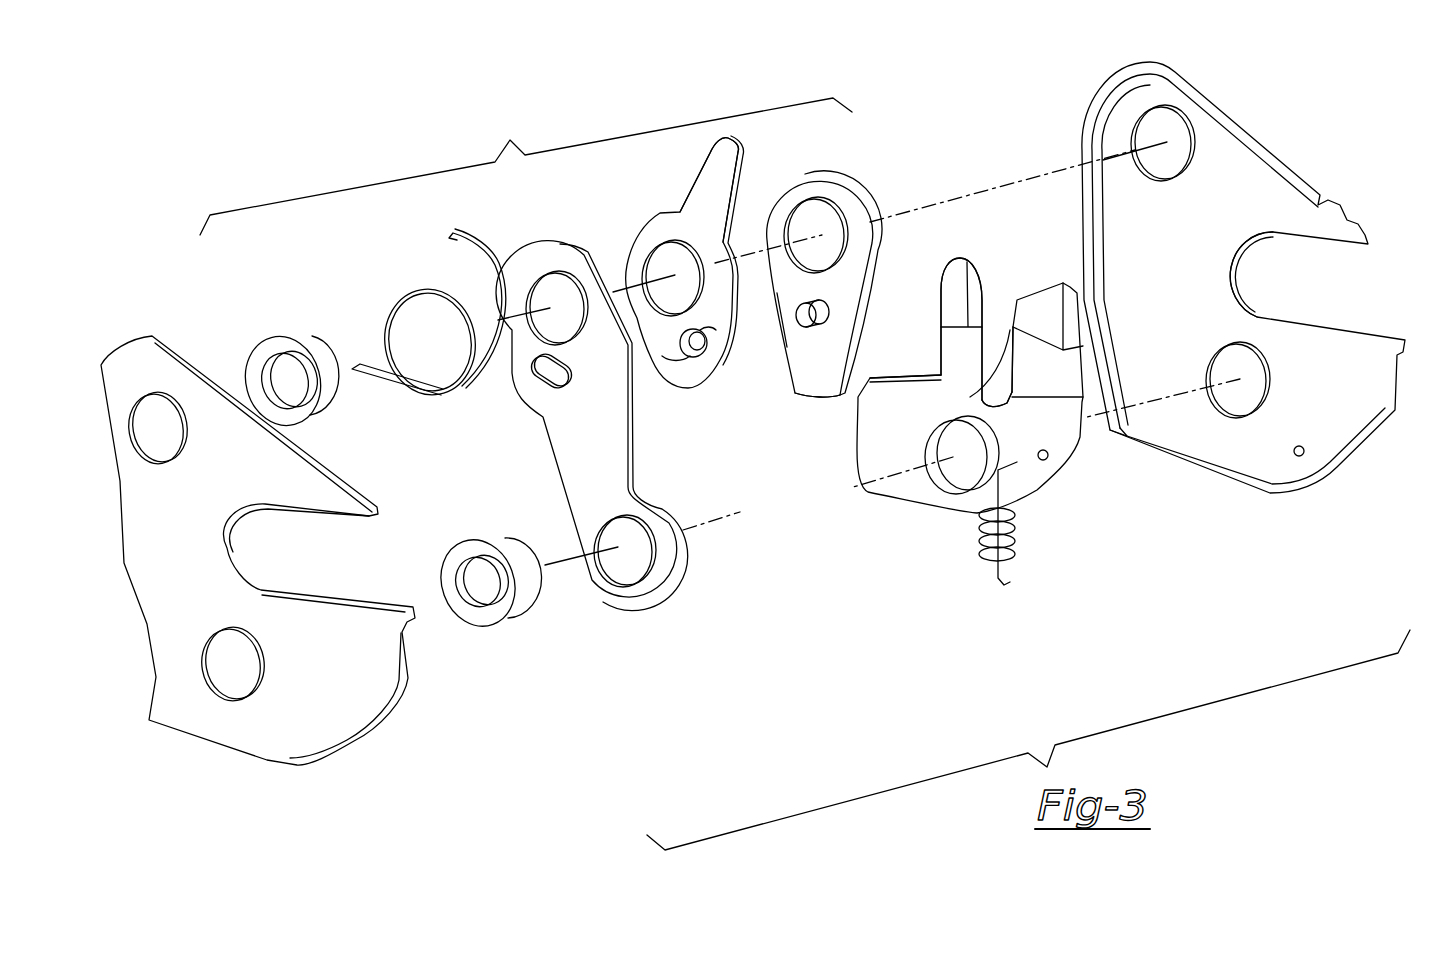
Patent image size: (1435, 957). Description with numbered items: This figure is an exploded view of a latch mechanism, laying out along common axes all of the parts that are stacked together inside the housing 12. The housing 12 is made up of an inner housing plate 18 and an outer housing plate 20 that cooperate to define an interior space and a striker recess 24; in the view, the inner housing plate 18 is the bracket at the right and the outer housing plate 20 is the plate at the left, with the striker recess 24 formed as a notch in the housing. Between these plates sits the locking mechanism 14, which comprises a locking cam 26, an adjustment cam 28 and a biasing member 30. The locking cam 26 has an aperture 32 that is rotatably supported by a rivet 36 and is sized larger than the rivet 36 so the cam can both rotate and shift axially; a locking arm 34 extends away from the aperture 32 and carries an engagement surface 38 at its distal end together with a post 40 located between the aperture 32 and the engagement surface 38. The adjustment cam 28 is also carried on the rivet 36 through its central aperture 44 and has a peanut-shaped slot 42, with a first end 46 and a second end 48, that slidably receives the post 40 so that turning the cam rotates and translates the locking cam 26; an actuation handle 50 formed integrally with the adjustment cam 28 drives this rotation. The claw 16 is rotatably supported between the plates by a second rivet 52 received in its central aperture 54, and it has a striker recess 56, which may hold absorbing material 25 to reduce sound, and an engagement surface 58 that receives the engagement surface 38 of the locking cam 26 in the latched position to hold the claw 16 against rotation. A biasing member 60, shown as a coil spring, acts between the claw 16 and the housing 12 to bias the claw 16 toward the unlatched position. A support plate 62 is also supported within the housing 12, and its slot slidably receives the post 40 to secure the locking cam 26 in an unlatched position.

The housing 12 is at (1242, 292).
The locking mechanism 14 is at (805, 474).
The claw 16 is at (1018, 382).
The inner housing plate 18 is at (1110, 444).
The outer housing plate 20 is at (226, 771).
The striker recess 24 is at (1327, 283).
The absorbing material 25 is at (993, 330).
The locking cam 26 is at (842, 304).
The adjustment cam 28 is at (677, 293).
The biasing member 30 is at (395, 318).
The aperture 32 is at (805, 215).
The locking arm 34 is at (802, 368).
The rivet 36 is at (265, 350).
The engagement surface 38 is at (818, 398).
The post 40 is at (798, 318).
The peanut-shaped slot 42 is at (690, 357).
The central aperture 44 is at (665, 263).
The first end 46 is at (687, 348).
The second end 48 is at (697, 327).
The actuation handle 50 is at (717, 163).
The rivet 52 is at (472, 620).
The central aperture 54 is at (950, 450).
The striker recess 56 is at (993, 360).
The engagement surface 58 is at (912, 378).
The biasing member 60 is at (1012, 540).
The support plate 62 is at (562, 437).